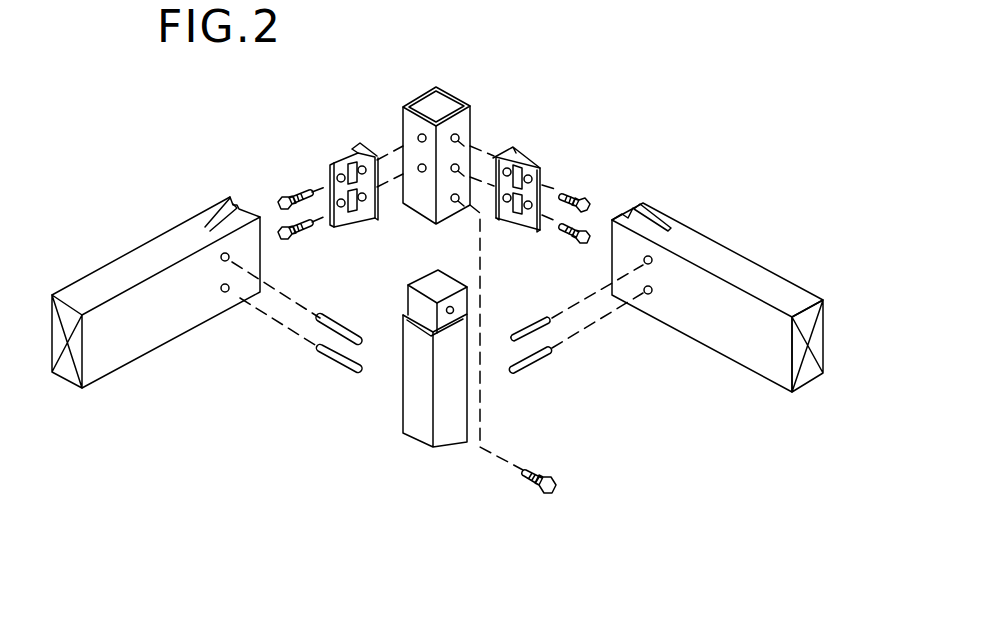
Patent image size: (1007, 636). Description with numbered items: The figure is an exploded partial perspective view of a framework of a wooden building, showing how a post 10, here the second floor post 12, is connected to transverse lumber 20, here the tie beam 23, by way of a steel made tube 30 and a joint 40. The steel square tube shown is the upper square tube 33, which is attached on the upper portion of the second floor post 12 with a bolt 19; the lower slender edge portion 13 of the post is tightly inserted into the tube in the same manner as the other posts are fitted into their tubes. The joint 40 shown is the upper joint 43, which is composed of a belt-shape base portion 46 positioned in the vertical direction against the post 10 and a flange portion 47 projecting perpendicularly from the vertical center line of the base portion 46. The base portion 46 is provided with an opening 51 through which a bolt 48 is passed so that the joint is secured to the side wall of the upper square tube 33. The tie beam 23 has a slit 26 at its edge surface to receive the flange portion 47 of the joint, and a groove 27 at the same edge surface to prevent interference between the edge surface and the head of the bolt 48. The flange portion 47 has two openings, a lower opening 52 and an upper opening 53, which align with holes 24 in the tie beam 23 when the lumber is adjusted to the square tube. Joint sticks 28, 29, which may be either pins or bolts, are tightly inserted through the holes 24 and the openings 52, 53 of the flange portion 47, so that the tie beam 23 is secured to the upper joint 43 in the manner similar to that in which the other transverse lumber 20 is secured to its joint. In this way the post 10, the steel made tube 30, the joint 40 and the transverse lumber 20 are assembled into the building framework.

The post 10 is at (356, 360).
The second floor post 12 is at (410, 403).
The lower slender edge portion 13 is at (415, 303).
The bolt 19 is at (558, 490).
The transverse lumber 20 is at (728, 297).
The tie beam 23 is at (723, 265).
The hole 24 is at (220, 257).
The slit 26 is at (206, 225).
The groove 27 is at (238, 208).
The joint stick 28 is at (410, 346).
The joint stick 29 is at (530, 323).
The steel made tube 30 is at (494, 131).
The upper square tube 33 is at (468, 96).
The joint 40 is at (572, 185).
The upper joint 43 is at (572, 185).
The base portion 46 is at (360, 146).
The flange portion 47 is at (352, 151).
The bolt 48 is at (598, 184).
The opening 51 is at (367, 203).
The opening 52 is at (523, 225).
The upper opening 53 is at (541, 166).